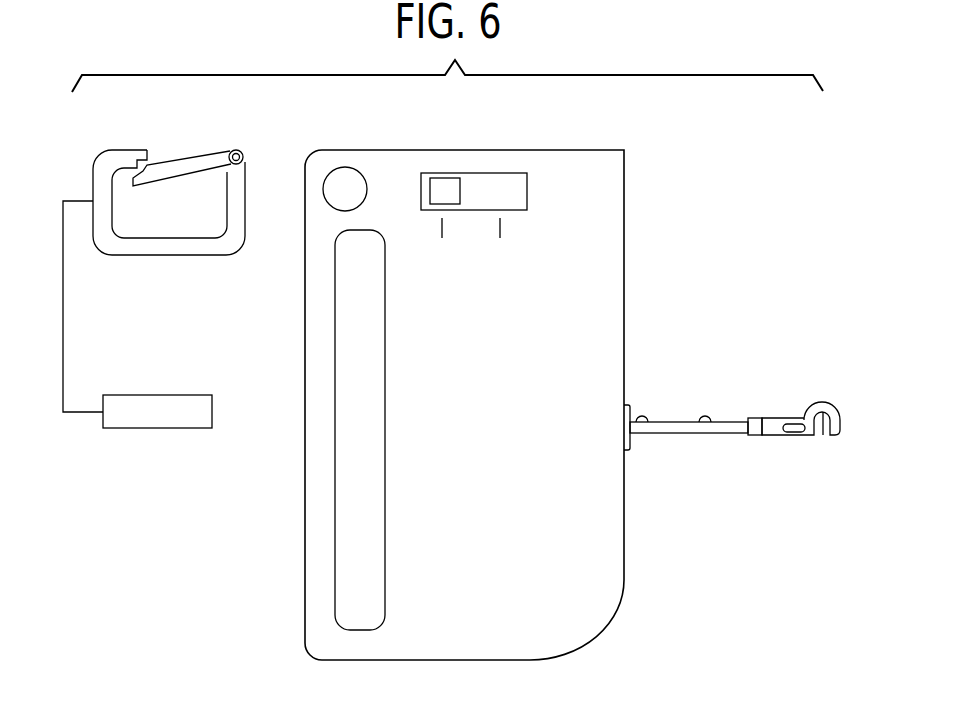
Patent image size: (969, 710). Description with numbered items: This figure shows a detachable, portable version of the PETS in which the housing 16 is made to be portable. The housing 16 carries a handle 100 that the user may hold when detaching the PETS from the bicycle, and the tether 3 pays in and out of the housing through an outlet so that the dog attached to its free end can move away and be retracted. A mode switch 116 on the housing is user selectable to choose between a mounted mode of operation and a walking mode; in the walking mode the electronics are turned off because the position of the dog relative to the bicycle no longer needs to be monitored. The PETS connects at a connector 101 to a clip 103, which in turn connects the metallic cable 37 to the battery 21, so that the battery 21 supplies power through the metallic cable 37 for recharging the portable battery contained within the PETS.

The connector 101 is at (307, 158).
The housing 16 is at (624, 283).
The handle 100 is at (385, 430).
The mode switch 116 is at (475, 212).
The tether 3 is at (673, 420).
The clip 103 is at (167, 255).
The metallic cable 37 is at (77, 201).
The battery 21 is at (157, 428).